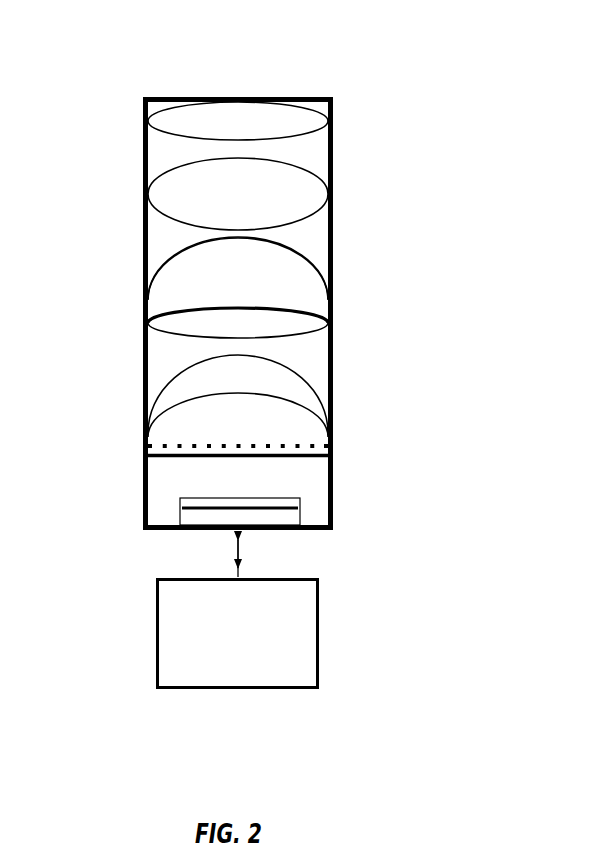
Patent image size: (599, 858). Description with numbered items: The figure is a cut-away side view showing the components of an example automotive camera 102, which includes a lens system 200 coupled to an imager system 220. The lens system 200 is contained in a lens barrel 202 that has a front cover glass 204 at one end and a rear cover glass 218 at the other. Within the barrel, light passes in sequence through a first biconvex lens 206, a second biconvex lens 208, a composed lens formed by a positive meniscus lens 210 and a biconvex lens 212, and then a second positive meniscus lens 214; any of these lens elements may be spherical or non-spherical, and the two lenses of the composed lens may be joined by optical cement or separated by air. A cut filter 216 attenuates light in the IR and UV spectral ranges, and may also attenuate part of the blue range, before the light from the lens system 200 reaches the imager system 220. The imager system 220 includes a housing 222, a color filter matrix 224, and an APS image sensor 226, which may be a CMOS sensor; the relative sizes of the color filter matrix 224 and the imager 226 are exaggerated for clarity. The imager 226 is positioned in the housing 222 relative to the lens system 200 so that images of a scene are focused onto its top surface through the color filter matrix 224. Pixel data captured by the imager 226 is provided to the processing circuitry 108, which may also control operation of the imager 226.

The camera 102 is at (346, 53).
The processing circuitry 108 is at (156, 631).
The lens system 200 is at (347, 192).
The lens barrel 202 is at (144, 395).
The front cover glass 204 is at (324, 96).
The first biconvex lens 206 is at (155, 133).
The second biconvex lens 208 is at (155, 218).
The positive meniscus lens 210 is at (322, 262).
The biconvex lens 212 is at (152, 335).
The second positive meniscus lens 214 is at (322, 392).
The cut filter 216 is at (325, 444).
The rear cover glass 218 is at (155, 462).
The imager system 220 is at (120, 503).
The housing 222 is at (335, 490).
The color filter matrix 224 is at (300, 503).
The APS image sensor 226 is at (180, 527).